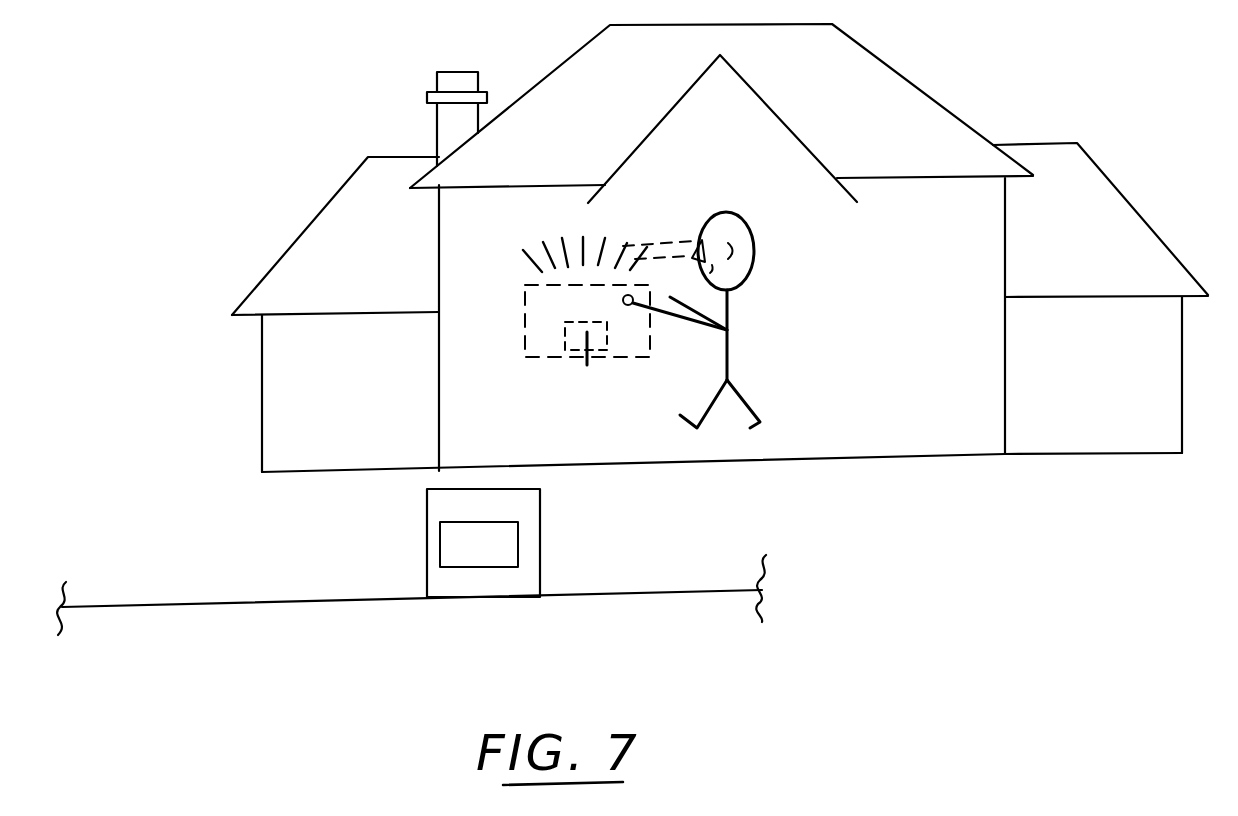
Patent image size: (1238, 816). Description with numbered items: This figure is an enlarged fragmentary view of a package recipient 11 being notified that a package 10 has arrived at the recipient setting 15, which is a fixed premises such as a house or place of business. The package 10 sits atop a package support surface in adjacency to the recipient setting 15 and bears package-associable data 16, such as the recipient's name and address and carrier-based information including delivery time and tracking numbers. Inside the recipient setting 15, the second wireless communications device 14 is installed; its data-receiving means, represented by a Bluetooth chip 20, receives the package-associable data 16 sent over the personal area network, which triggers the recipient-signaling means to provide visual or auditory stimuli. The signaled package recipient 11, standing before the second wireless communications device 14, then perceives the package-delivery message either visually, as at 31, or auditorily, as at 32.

The package 10 is at (427, 585).
The package recipient 11 is at (755, 252).
The second wireless communications device 14 is at (525, 318).
The recipient setting 15 is at (943, 100).
The package-associable data 16 is at (515, 533).
The Bluetooth chip 20 is at (584, 364).
The visual perception 31 is at (670, 242).
The auditory perception 32 is at (717, 252).